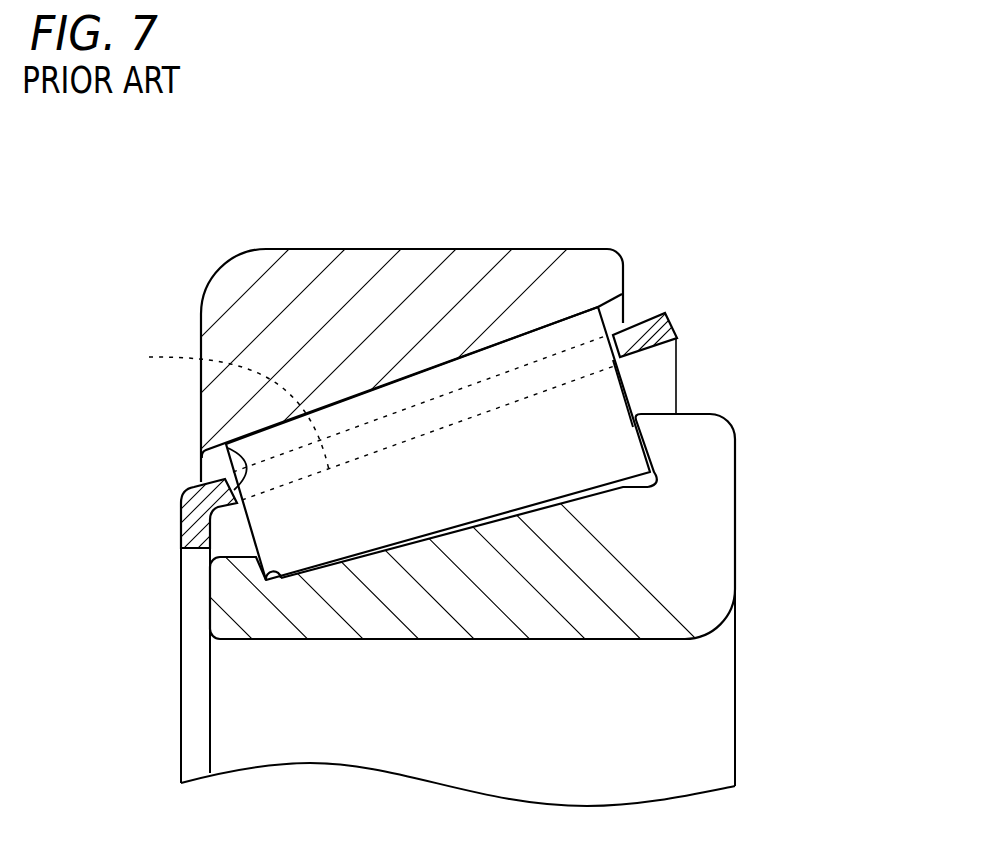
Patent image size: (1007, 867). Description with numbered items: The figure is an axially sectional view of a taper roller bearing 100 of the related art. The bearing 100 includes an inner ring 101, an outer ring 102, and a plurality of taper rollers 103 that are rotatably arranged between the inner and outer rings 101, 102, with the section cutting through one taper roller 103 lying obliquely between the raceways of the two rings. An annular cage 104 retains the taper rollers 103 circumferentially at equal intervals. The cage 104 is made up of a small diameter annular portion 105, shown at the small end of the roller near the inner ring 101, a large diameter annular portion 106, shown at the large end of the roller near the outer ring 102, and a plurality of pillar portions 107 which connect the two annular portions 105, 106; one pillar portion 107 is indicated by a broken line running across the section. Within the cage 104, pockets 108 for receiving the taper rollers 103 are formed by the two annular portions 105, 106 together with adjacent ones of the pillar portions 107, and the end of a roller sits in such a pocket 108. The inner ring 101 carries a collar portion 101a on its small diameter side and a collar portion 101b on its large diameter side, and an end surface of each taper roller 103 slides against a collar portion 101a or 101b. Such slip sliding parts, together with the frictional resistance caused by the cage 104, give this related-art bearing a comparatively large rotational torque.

The taper roller bearing 100 is at (688, 232).
The inner ring 101 is at (737, 531).
The collar portion 101a is at (228, 583).
The collar portion 101b is at (705, 437).
The outer ring 102 is at (363, 248).
The taper roller 103 is at (491, 502).
The annular cage 104 is at (672, 322).
The small diameter annular portion 105 is at (190, 538).
The large diameter annular portion 106 is at (648, 343).
The pillar portion 107 is at (216, 403).
The pocket 108 is at (243, 446).